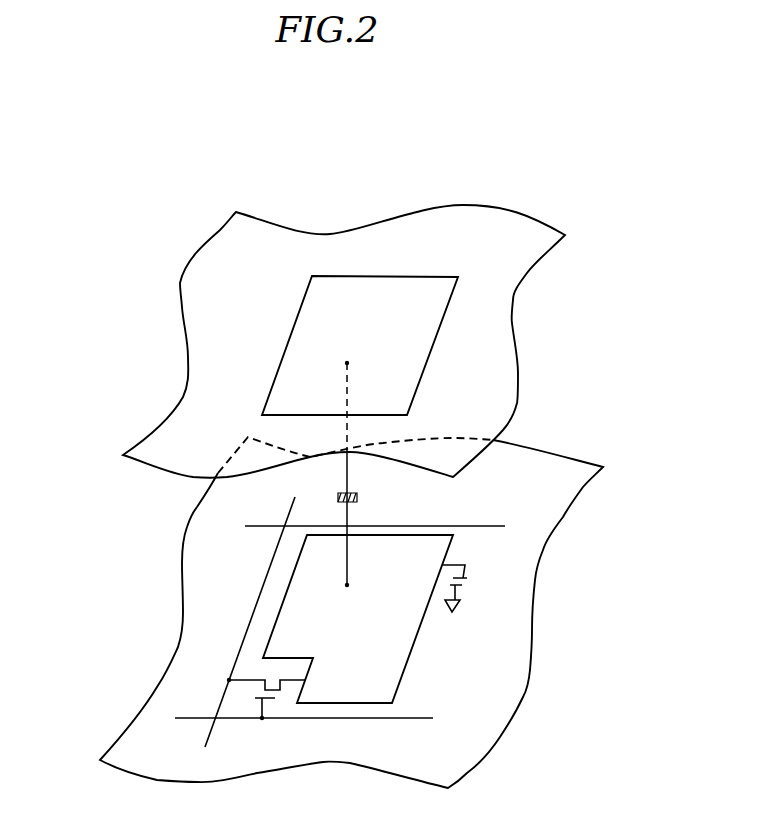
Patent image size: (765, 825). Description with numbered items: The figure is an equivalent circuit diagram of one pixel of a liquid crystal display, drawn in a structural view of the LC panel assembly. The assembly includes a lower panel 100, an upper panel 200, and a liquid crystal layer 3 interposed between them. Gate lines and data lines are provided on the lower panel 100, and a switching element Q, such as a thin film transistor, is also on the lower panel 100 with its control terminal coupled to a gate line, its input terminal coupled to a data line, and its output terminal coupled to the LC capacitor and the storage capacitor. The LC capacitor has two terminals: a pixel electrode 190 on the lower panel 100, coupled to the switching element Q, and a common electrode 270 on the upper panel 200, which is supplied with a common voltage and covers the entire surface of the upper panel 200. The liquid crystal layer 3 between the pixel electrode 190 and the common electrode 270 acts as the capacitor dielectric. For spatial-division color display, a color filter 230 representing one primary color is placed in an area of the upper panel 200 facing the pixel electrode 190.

The liquid crystal layer 3 is at (125, 535).
The lower panel 100 is at (360, 612).
The pixel electrode 190 is at (410, 658).
The upper panel 200 is at (363, 341).
The color filter 230 is at (432, 357).
The common electrode 270 is at (513, 323).